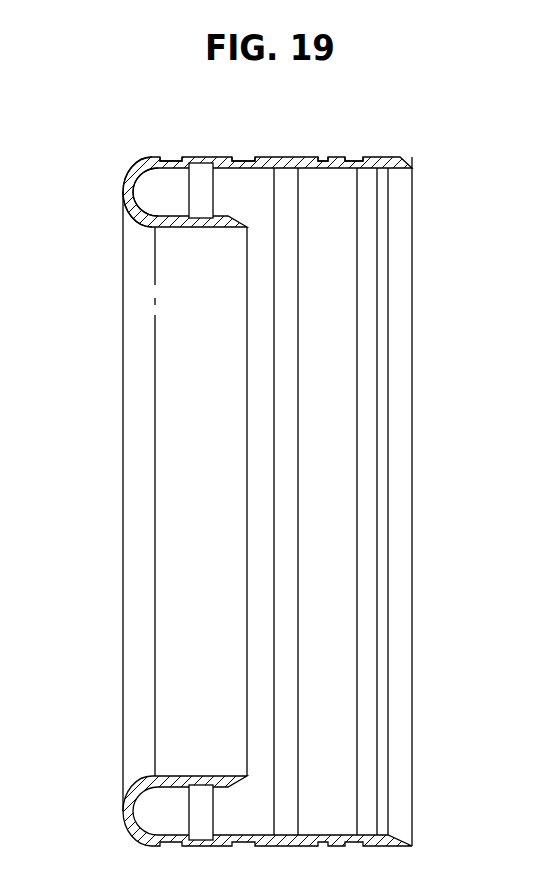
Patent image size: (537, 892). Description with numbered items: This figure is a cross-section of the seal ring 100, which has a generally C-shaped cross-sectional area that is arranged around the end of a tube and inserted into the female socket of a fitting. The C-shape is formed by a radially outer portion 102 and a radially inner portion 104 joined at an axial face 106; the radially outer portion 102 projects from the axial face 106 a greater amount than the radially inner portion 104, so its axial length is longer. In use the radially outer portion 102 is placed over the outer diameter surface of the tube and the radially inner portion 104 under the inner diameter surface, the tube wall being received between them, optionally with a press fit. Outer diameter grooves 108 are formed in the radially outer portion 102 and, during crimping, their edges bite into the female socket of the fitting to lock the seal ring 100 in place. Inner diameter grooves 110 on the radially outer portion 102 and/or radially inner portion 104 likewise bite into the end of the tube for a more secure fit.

The seal ring 100 is at (122, 450).
The radially outer portion 102 is at (352, 160).
The radially inner portion 104 is at (205, 227).
The axial face 106 is at (122, 177).
The outer diameter grooves 108 is at (330, 158).
The inner diameter grooves 110 is at (205, 164).